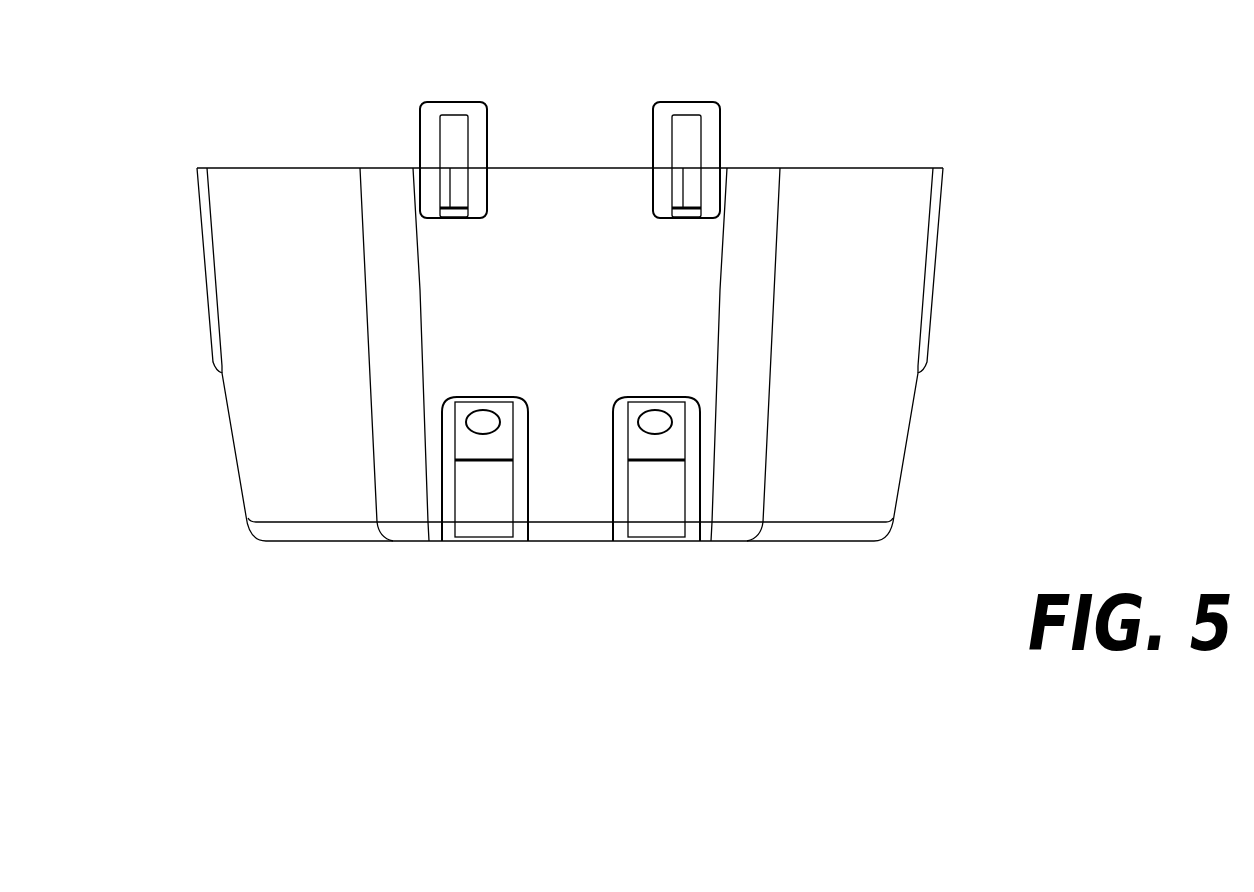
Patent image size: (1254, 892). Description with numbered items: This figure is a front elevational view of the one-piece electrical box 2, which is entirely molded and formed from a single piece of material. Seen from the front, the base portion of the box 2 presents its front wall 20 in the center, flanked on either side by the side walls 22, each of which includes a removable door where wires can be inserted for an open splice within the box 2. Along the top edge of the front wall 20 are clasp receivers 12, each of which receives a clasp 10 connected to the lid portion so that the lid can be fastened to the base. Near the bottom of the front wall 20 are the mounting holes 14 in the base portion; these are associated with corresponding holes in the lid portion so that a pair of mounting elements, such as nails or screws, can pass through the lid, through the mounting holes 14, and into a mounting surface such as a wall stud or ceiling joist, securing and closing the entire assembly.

The one-piece electrical box 2 is at (172, 98).
The clasp 10 is at (653, 108).
The clasp receiver 12 is at (683, 188).
The mounting holes 14 is at (655, 422).
The front wall 20 is at (584, 313).
The side walls 22 is at (312, 313).